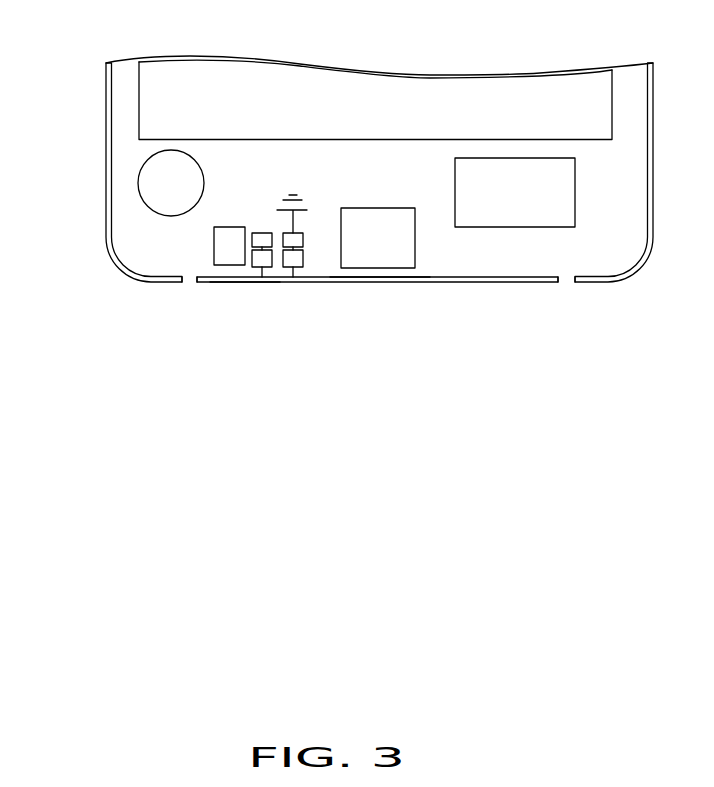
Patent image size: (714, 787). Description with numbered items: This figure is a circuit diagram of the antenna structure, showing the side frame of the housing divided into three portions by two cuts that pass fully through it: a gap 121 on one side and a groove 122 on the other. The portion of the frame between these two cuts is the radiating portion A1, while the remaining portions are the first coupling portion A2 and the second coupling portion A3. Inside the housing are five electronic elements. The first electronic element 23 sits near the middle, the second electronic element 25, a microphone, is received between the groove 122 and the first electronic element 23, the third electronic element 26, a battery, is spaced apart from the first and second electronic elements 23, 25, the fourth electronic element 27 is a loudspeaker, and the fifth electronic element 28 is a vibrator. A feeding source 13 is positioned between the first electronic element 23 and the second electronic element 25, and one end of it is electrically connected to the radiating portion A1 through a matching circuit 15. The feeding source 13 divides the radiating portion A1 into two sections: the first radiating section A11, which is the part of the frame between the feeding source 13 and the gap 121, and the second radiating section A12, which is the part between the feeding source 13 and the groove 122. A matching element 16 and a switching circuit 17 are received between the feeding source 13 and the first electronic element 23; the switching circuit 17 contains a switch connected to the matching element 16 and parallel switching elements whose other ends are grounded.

The radiating portion A1 is at (454, 329).
The first radiating section A11 is at (380, 278).
The second radiating section A12 is at (243, 280).
The first coupling portion A2 is at (638, 268).
The second coupling portion A3 is at (120, 264).
The gap 121 is at (565, 280).
The groove 122 is at (189, 280).
The feeding source 13 is at (262, 233).
The matching circuit 15 is at (262, 259).
The matching element 16 is at (295, 258).
The switching circuit 17 is at (298, 240).
The first electronic element 23 is at (377, 223).
The second electronic element 25 is at (230, 253).
The third electronic element 26 is at (158, 89).
The fourth electronic element 27 is at (507, 173).
The fifth electronic element 28 is at (160, 182).